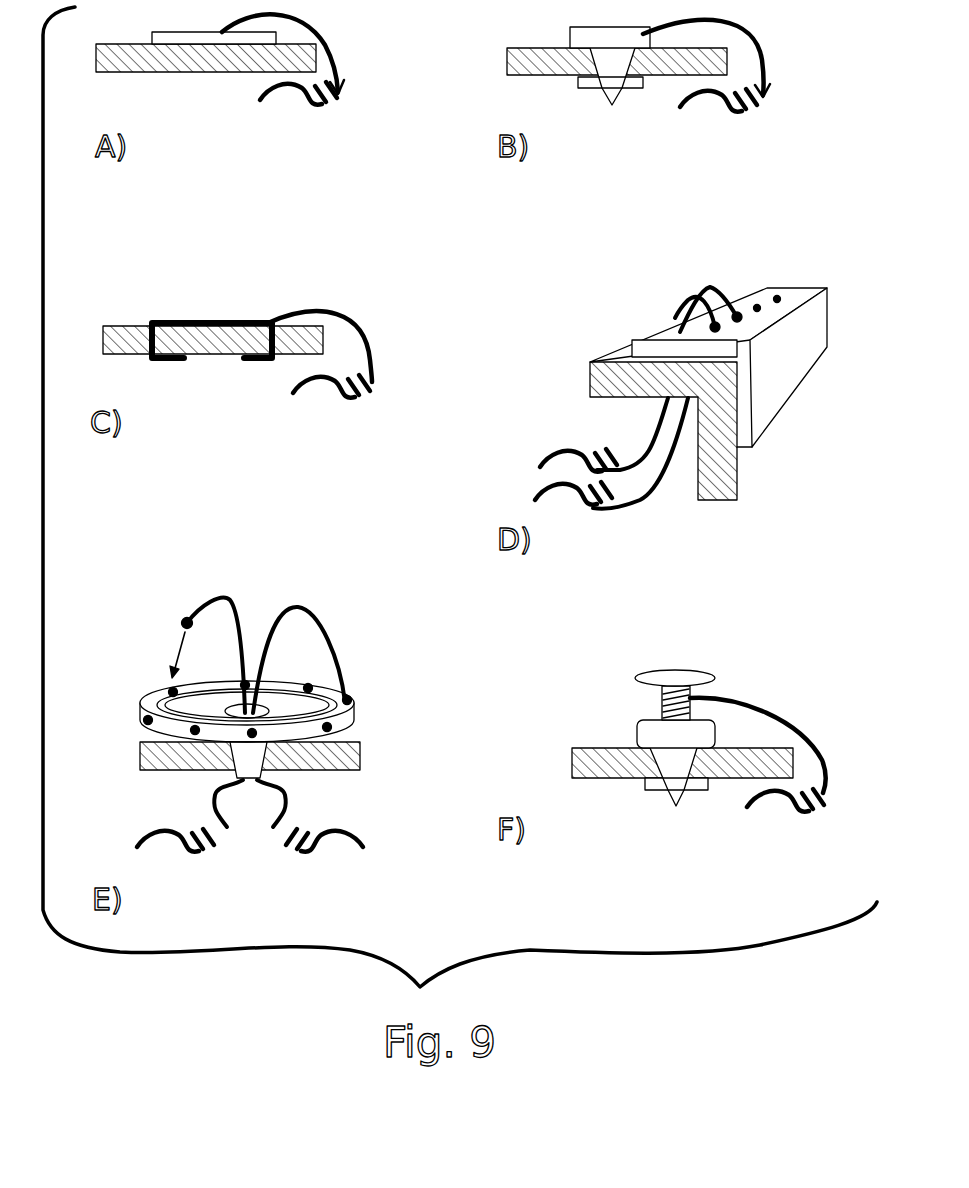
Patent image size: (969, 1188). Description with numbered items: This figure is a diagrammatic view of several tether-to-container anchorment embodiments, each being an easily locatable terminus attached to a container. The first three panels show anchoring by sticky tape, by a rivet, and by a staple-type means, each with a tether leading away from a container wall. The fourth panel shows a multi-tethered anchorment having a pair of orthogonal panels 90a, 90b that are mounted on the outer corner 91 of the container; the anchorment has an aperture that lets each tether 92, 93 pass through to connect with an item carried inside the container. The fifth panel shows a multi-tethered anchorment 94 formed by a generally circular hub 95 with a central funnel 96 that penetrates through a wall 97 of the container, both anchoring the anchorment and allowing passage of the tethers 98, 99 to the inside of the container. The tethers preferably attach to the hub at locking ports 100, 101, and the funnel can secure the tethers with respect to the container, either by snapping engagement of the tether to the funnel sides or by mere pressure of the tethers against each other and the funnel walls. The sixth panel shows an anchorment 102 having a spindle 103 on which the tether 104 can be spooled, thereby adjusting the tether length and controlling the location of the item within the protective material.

The orthogonal panel 90a is at (827, 329).
The orthogonal panel 90b is at (800, 288).
The outer corner 91 is at (590, 371).
The tether 92 is at (637, 462).
The tether 93 is at (712, 288).
The multi-tethered anchorment 94 is at (261, 685).
The circular hub 95 is at (140, 710).
The central funnel 96 is at (263, 753).
The wall 97 is at (350, 748).
The tether 98 is at (230, 600).
The tether 99 is at (327, 620).
The locking port 100 is at (172, 692).
The locking port 101 is at (350, 702).
The anchorment 102 is at (718, 716).
The spindle 103 is at (703, 673).
The tether 104 is at (803, 728).